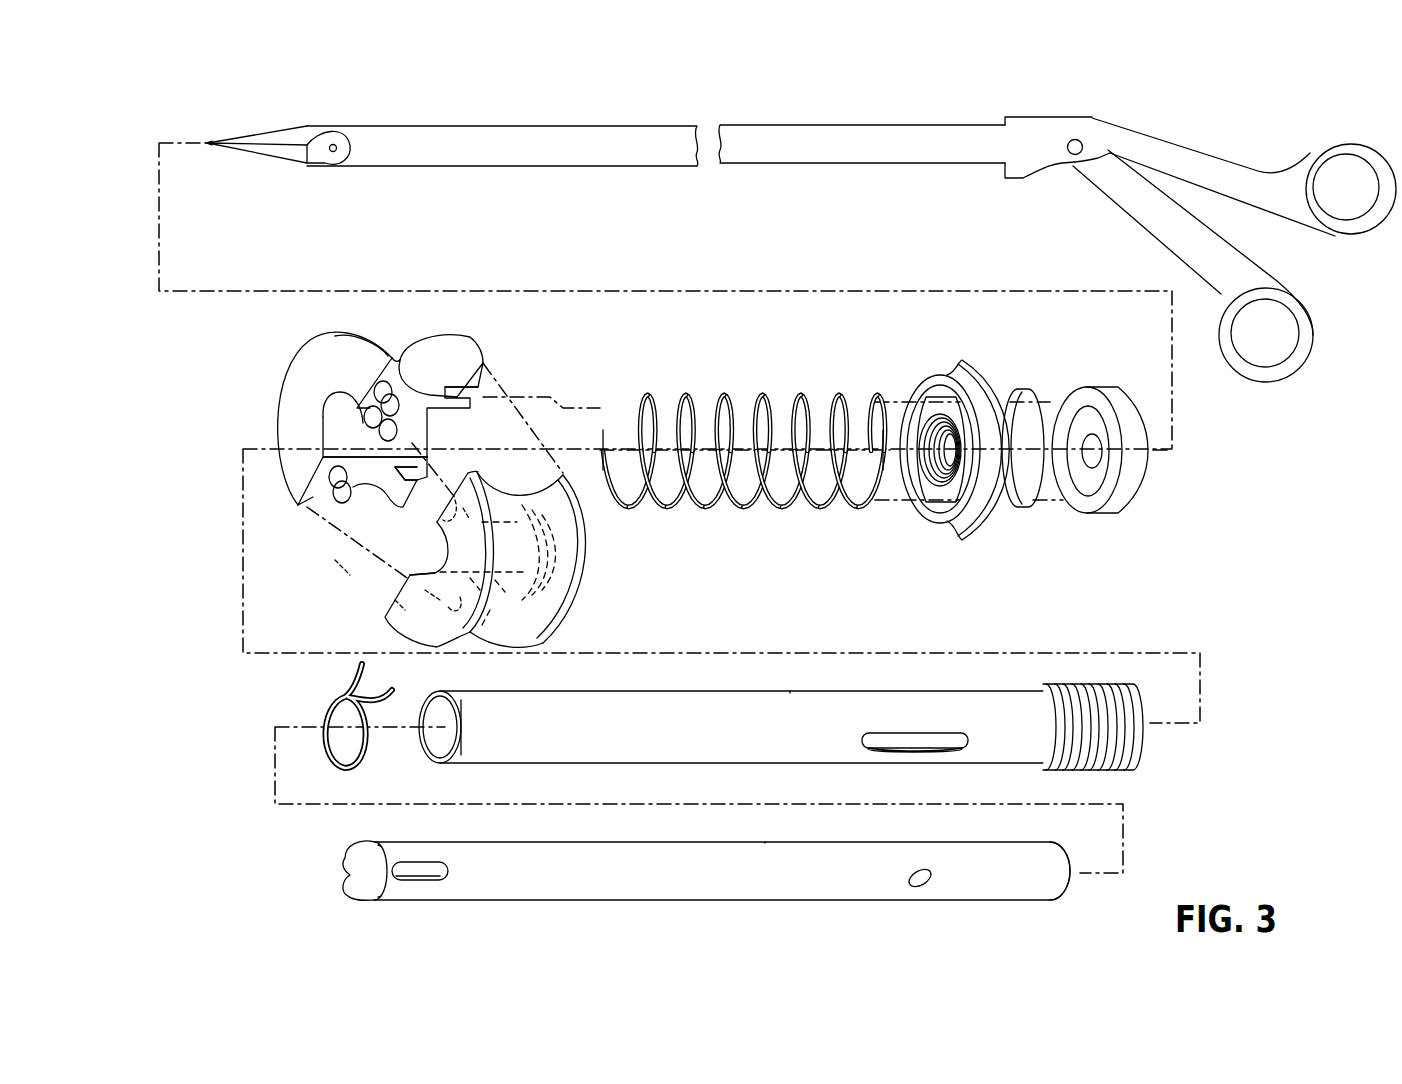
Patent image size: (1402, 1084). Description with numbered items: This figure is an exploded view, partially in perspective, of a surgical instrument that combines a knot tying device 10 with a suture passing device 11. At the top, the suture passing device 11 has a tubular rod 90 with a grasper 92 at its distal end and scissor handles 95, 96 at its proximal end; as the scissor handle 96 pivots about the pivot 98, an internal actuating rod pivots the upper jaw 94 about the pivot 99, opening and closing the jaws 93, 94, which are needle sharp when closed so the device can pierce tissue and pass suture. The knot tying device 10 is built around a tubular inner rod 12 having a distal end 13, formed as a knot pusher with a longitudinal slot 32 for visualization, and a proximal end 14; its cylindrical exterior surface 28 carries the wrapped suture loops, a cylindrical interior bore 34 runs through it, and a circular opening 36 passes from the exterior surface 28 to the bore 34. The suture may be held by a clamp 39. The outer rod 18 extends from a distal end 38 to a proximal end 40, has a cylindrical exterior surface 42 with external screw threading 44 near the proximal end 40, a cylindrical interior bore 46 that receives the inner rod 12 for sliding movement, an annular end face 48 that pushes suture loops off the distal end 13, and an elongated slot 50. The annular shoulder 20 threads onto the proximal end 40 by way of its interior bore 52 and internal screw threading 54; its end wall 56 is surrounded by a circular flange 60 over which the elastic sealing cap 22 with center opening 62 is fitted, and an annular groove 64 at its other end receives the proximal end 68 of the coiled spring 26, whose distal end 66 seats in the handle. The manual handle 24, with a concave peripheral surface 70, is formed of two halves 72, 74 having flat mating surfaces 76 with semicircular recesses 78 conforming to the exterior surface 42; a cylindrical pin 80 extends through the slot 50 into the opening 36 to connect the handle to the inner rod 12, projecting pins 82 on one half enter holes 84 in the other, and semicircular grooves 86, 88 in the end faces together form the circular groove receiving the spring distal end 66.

The knot tying device 10 is at (1168, 608).
The suture passing device 11 is at (790, 235).
The tubular rod 12 is at (697, 889).
The distal end 13 is at (396, 895).
The proximal end 14 is at (1042, 885).
The outer rod 18 is at (798, 743).
The annular shoulder 20 is at (972, 461).
The sealing cap 22 is at (1134, 469).
The manual handle 24 is at (444, 475).
The spring 26 is at (742, 446).
The cylindrical exterior surface 28 is at (765, 872).
The longitudinal slot 32 is at (426, 872).
The cylindrical interior bore 34 is at (355, 886).
The circular opening 36 is at (918, 884).
The distal end 38 is at (478, 756).
The clamp 39 is at (345, 690).
The proximal end 40 is at (1145, 740).
The cylindrical exterior surface 42 is at (790, 752).
The external screw threading 44 is at (1100, 770).
The cylindrical interior bore 46 is at (436, 752).
The annular end face 48 is at (432, 733).
The elongated slot 50 is at (918, 746).
The interior bore 52 is at (927, 472).
The internal screw threading 54 is at (926, 428).
The end wall 56 is at (1031, 406).
The circular flange 60 is at (1024, 500).
The center opening 62 is at (1091, 468).
The annular groove 64 is at (934, 396).
The distal end 66 is at (603, 425).
The proximal end 68 is at (885, 465).
The peripheral surface 70 is at (450, 345).
The handle half 72 is at (381, 418).
The handle half 74 is at (509, 559).
The flat mating surfaces 76 is at (322, 497).
The semicircular recesses 78 is at (330, 405).
The cylindrical pin 80 is at (320, 413).
The projecting pins 82 is at (385, 383).
The holes 84 is at (466, 492).
The semicircular groove 86 is at (478, 390).
The semicircular groove 88 is at (553, 512).
The tubular rod 90 is at (470, 166).
The grasper 92 is at (245, 160).
The jaw 93 is at (296, 153).
The upper jaw 94 is at (264, 125).
The scissor handle 95 is at (1195, 152).
The scissor handle 96 is at (1157, 232).
The pivot 98 is at (1075, 158).
The pivot 99 is at (335, 153).